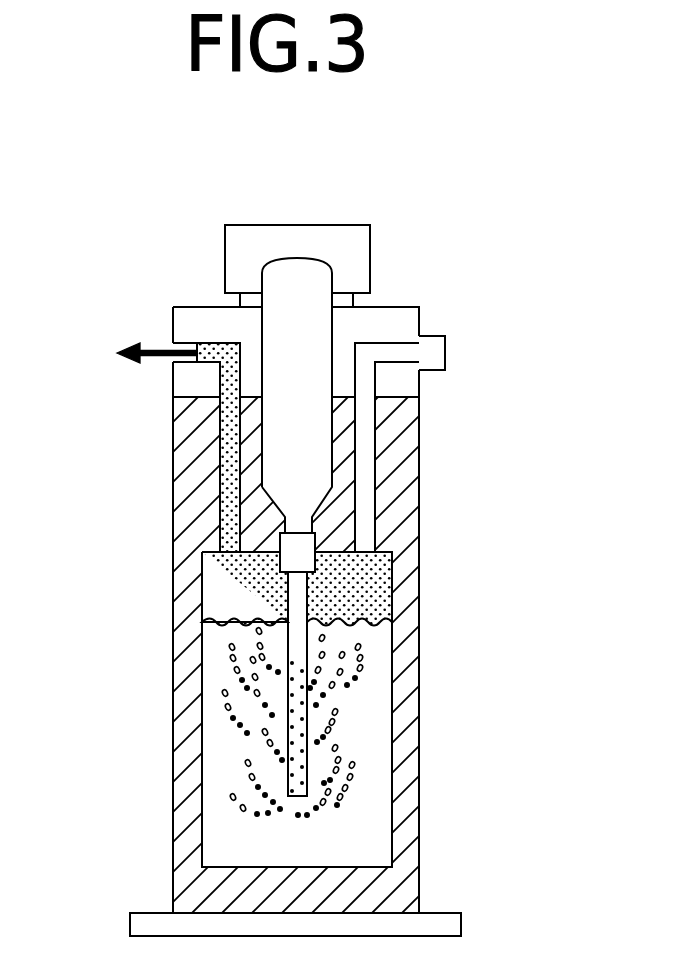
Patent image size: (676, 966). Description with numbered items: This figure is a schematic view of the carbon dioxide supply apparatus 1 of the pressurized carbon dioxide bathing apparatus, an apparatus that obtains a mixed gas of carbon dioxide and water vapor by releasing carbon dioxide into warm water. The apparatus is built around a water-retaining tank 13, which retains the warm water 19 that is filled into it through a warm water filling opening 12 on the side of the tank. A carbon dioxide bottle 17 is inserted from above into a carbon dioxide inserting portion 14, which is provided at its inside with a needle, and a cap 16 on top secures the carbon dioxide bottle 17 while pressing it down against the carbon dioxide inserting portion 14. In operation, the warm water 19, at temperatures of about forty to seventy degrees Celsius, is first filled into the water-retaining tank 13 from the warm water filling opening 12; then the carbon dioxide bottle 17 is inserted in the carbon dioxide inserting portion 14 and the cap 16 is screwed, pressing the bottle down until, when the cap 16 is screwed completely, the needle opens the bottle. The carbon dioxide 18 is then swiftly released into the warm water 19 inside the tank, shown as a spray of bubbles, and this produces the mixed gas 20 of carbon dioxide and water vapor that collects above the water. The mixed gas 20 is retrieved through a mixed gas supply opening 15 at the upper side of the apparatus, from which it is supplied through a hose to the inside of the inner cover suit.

The carbon dioxide supply apparatus 1 is at (150, 230).
The warm water filling opening 12 is at (433, 336).
The water-retaining tank 13 is at (393, 693).
The carbon dioxide inserting portion 14 is at (305, 553).
The mixed gas supply opening 15 is at (217, 342).
The cap 16 is at (343, 225).
The carbon dioxide bottle 17 is at (268, 443).
The carbon dioxide 18 is at (228, 708).
The warm water 19 is at (217, 778).
The mixed gas 20 is at (205, 590).